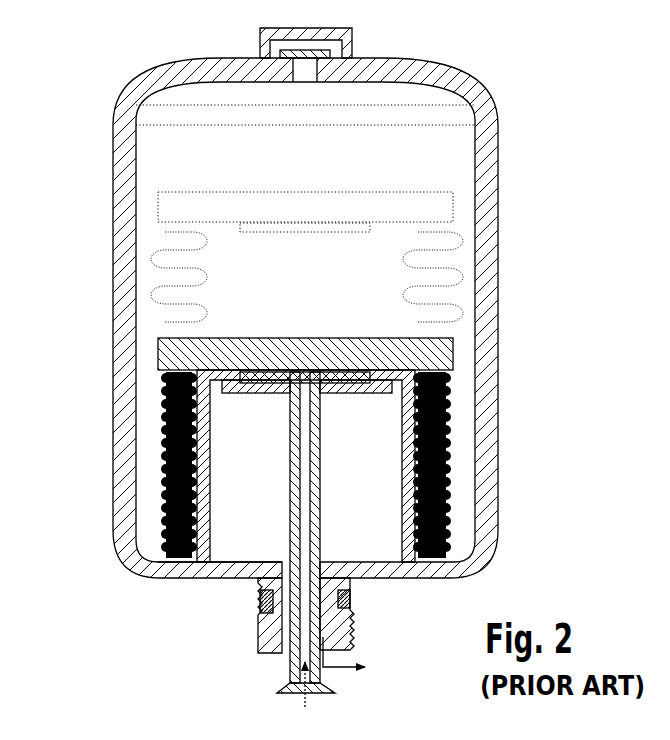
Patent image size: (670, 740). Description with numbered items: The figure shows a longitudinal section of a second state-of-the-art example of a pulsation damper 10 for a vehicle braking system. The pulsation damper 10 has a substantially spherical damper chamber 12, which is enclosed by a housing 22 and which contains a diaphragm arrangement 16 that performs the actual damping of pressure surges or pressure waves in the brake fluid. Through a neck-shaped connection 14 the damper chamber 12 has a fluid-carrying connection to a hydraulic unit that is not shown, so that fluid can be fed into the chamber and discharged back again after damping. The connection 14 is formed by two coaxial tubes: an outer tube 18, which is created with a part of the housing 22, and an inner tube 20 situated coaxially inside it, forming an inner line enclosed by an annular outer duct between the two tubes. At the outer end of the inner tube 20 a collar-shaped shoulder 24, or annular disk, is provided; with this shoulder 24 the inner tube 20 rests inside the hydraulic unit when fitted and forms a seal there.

The pulsation damper 10 is at (267, 371).
The damper chamber 12 is at (185, 152).
The connection 14 is at (368, 624).
The diaphragm arrangement 16 is at (398, 180).
The outer tube 18 is at (265, 635).
The inner tube 20 is at (283, 668).
The housing 22 is at (220, 568).
The collar-shaped shoulder 24 is at (327, 694).